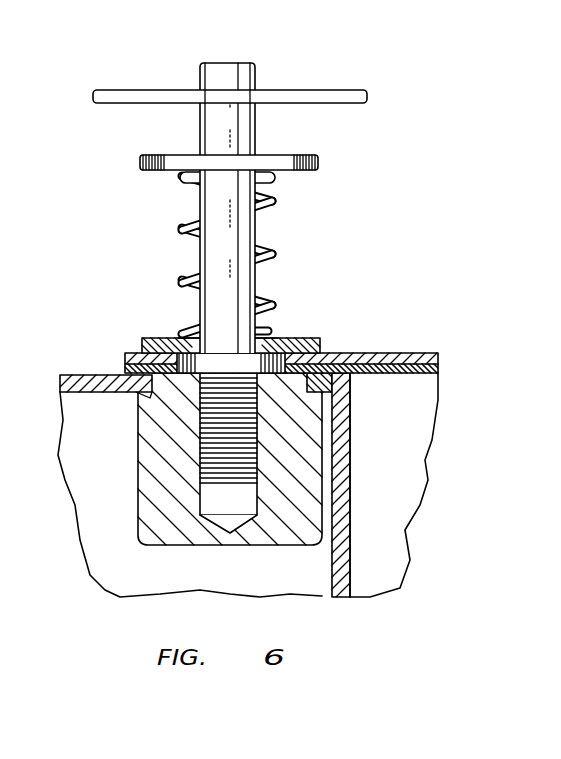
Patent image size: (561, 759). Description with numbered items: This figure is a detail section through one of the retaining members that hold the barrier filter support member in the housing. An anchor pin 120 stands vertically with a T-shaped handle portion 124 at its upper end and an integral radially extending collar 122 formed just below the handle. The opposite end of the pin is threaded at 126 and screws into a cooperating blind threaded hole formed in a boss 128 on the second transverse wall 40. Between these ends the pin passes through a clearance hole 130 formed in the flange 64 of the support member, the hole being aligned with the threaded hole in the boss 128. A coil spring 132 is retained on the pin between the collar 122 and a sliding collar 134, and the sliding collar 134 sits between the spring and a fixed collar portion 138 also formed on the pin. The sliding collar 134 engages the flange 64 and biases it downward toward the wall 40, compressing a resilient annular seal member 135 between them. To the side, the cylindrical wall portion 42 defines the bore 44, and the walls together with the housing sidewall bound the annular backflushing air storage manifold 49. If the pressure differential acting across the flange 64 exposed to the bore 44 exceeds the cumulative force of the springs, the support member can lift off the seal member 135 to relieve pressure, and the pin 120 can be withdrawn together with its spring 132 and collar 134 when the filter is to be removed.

The anchor pin 120 is at (236, 63).
The T-shaped handle portion 124 is at (343, 82).
The radially extending collar 122 is at (298, 170).
The coil spring 132 is at (277, 254).
The clearance hole 130 is at (275, 339).
The fixed collar portion 138 is at (178, 334).
The sliding collar 134 is at (330, 353).
The flange 64 is at (395, 353).
The resilient annular seal member 135 is at (347, 375).
The second transverse wall 40 is at (88, 373).
The annular filter backflushing air storage manifold 49 is at (98, 461).
The boss 128 is at (143, 545).
The threaded end 126 is at (258, 516).
The bore 44 is at (350, 520).
The cylindrical wall portion 42 is at (340, 560).